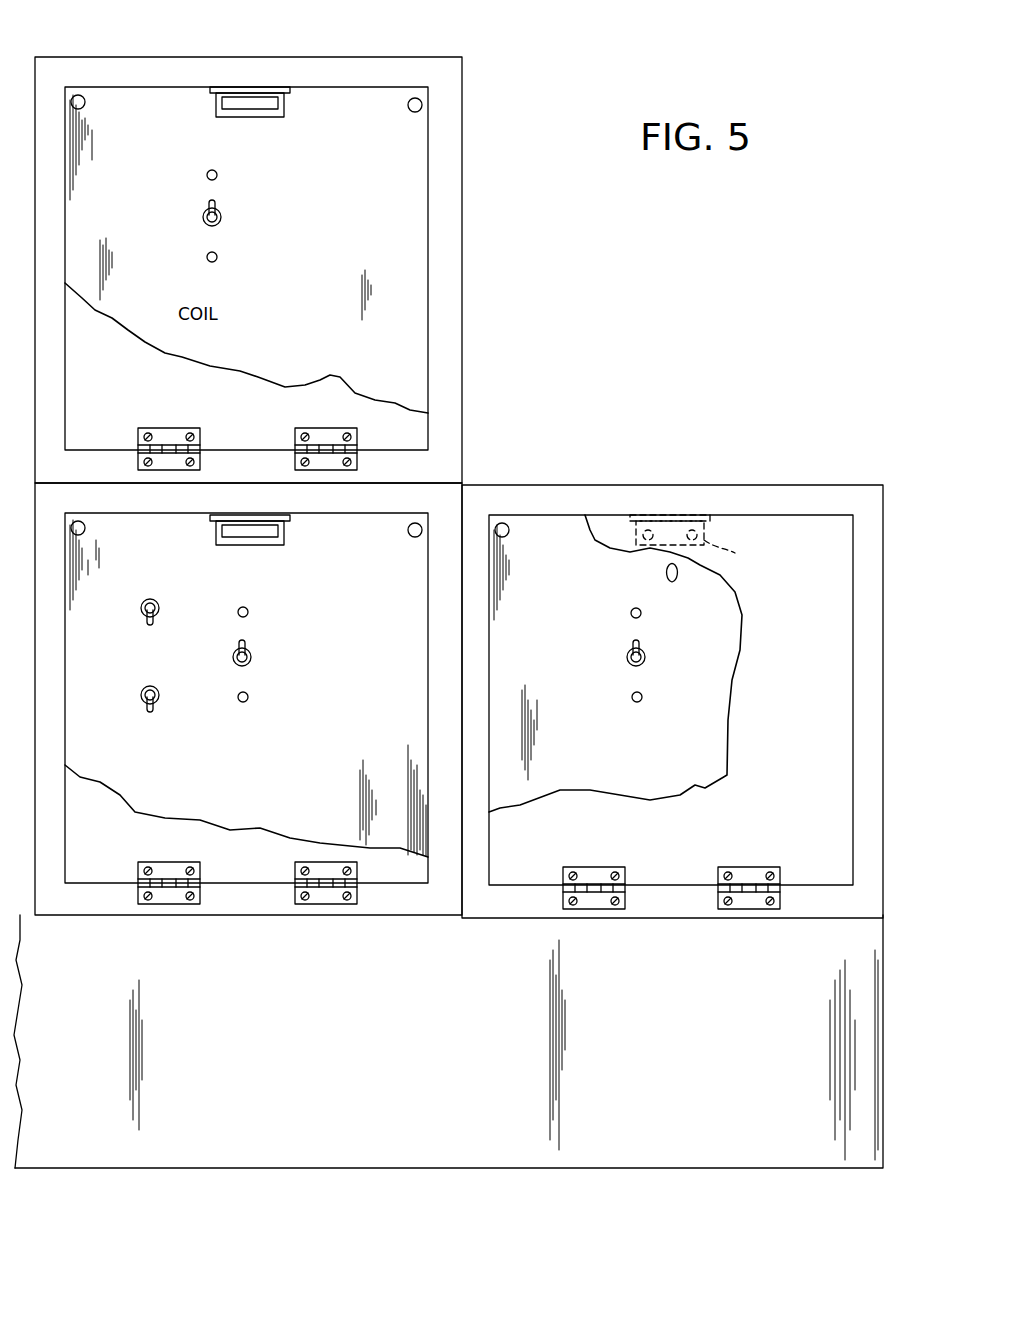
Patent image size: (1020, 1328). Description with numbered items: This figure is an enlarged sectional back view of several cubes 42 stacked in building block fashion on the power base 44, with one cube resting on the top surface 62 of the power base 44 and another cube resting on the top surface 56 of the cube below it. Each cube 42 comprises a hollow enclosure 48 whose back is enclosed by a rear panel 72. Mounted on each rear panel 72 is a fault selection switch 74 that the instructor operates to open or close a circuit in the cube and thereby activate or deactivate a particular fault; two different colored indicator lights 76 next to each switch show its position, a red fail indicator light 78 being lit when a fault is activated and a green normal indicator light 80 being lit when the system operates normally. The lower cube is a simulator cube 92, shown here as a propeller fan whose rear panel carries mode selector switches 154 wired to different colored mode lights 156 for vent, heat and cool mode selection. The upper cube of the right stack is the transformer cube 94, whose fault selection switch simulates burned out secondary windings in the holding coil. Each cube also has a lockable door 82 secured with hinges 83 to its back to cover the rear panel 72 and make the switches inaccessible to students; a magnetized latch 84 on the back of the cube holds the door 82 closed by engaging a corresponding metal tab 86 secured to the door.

The cube 42 is at (486, 300).
The power base 44 is at (215, 1168).
The hollow enclosure 48 is at (466, 174).
The top surface 56 is at (430, 57).
The top surface of the power base 62 is at (78, 911).
The rear panel 72 is at (152, 92).
The fault selection switch 74 is at (203, 215).
The indicator lights 76 is at (218, 163).
The fail indicator light 78 is at (206, 260).
The normal indicator light 80 is at (209, 171).
The lockable door 82 is at (825, 537).
The hinges 83 is at (295, 440).
The magnetized latch 84 is at (248, 98).
The metal tab 86 is at (735, 553).
The simulator cube 92 is at (273, 919).
The transformer cube 94 is at (816, 490).
The mode selector switches 154 is at (140, 611).
The mode lights 156 is at (140, 661).